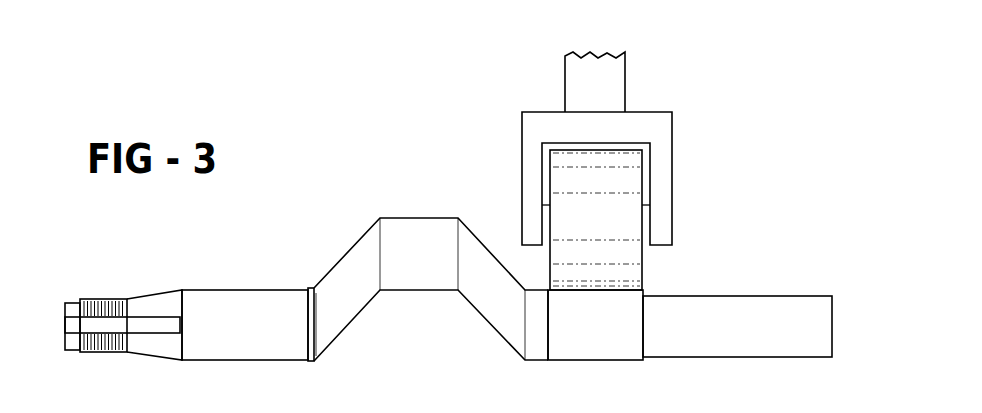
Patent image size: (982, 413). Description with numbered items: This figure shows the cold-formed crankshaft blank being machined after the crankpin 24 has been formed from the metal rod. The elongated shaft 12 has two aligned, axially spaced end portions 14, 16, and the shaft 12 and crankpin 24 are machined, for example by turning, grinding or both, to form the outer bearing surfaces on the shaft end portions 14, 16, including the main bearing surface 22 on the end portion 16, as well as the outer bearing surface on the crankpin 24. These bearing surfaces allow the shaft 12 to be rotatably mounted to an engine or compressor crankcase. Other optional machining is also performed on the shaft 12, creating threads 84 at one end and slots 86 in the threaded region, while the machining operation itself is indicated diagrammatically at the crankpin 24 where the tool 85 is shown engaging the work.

The shaft 12 is at (250, 361).
The end portion 14 is at (277, 292).
The end portion 16 is at (783, 297).
The main bearing surface 22 is at (705, 313).
The crankpin 24 is at (415, 225).
The threads 84 is at (100, 300).
The mounting bracket 85 is at (655, 128).
The slots 86 is at (75, 325).